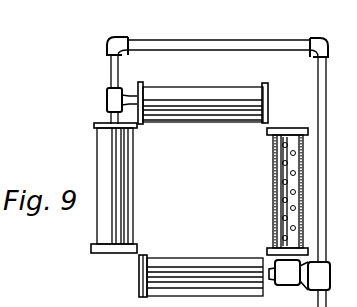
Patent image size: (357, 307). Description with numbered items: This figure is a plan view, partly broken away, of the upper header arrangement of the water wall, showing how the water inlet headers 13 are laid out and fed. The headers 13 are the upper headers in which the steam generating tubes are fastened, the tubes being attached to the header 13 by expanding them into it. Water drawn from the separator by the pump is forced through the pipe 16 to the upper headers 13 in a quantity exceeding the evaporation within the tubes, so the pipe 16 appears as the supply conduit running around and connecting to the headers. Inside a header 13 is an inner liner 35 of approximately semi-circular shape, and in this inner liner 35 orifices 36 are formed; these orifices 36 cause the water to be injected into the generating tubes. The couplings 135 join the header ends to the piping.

The pipe 16 is at (244, 42).
The upper header 13 is at (212, 90).
The flange coupling 135 is at (283, 127).
The inner liner 35 is at (283, 160).
The orifices 36 is at (283, 217).